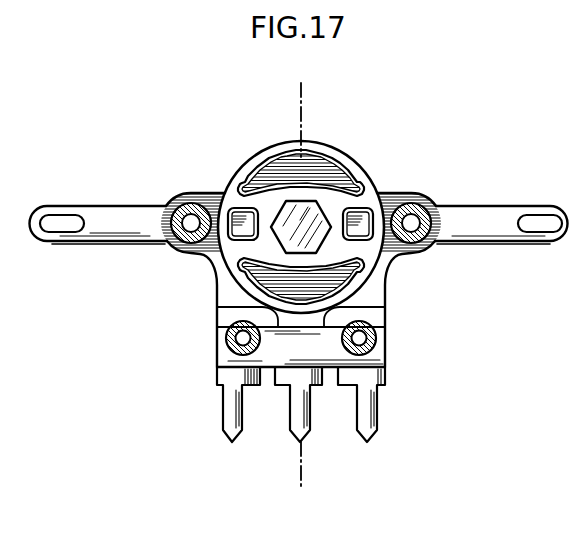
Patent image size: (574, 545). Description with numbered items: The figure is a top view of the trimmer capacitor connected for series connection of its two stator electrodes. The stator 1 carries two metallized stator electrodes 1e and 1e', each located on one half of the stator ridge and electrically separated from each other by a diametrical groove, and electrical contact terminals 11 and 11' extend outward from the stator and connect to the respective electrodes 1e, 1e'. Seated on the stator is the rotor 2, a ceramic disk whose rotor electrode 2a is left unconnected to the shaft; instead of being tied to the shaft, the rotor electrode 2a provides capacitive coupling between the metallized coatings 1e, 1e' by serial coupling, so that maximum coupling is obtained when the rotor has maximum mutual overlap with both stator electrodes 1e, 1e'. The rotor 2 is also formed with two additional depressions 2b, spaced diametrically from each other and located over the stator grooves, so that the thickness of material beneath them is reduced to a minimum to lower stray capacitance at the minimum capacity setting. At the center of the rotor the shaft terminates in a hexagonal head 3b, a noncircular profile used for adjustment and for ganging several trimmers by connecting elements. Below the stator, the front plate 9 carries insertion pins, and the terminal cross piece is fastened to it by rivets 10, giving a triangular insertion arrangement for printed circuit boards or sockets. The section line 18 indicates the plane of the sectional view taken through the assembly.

The stator 1 is at (232, 298).
The stator electrode 1e is at (193, 209).
The stator electrode 1e' is at (414, 209).
The rotor 2 is at (238, 184).
The rotor electrode 2a is at (337, 168).
The depressions 2b is at (243, 232).
The hexagonal head 3b is at (323, 234).
The front plate 9 is at (372, 323).
The rivets 10 is at (233, 339).
The terminal 11 is at (99, 203).
The terminal 11' is at (501, 205).
The section line 18 is at (284, 95).